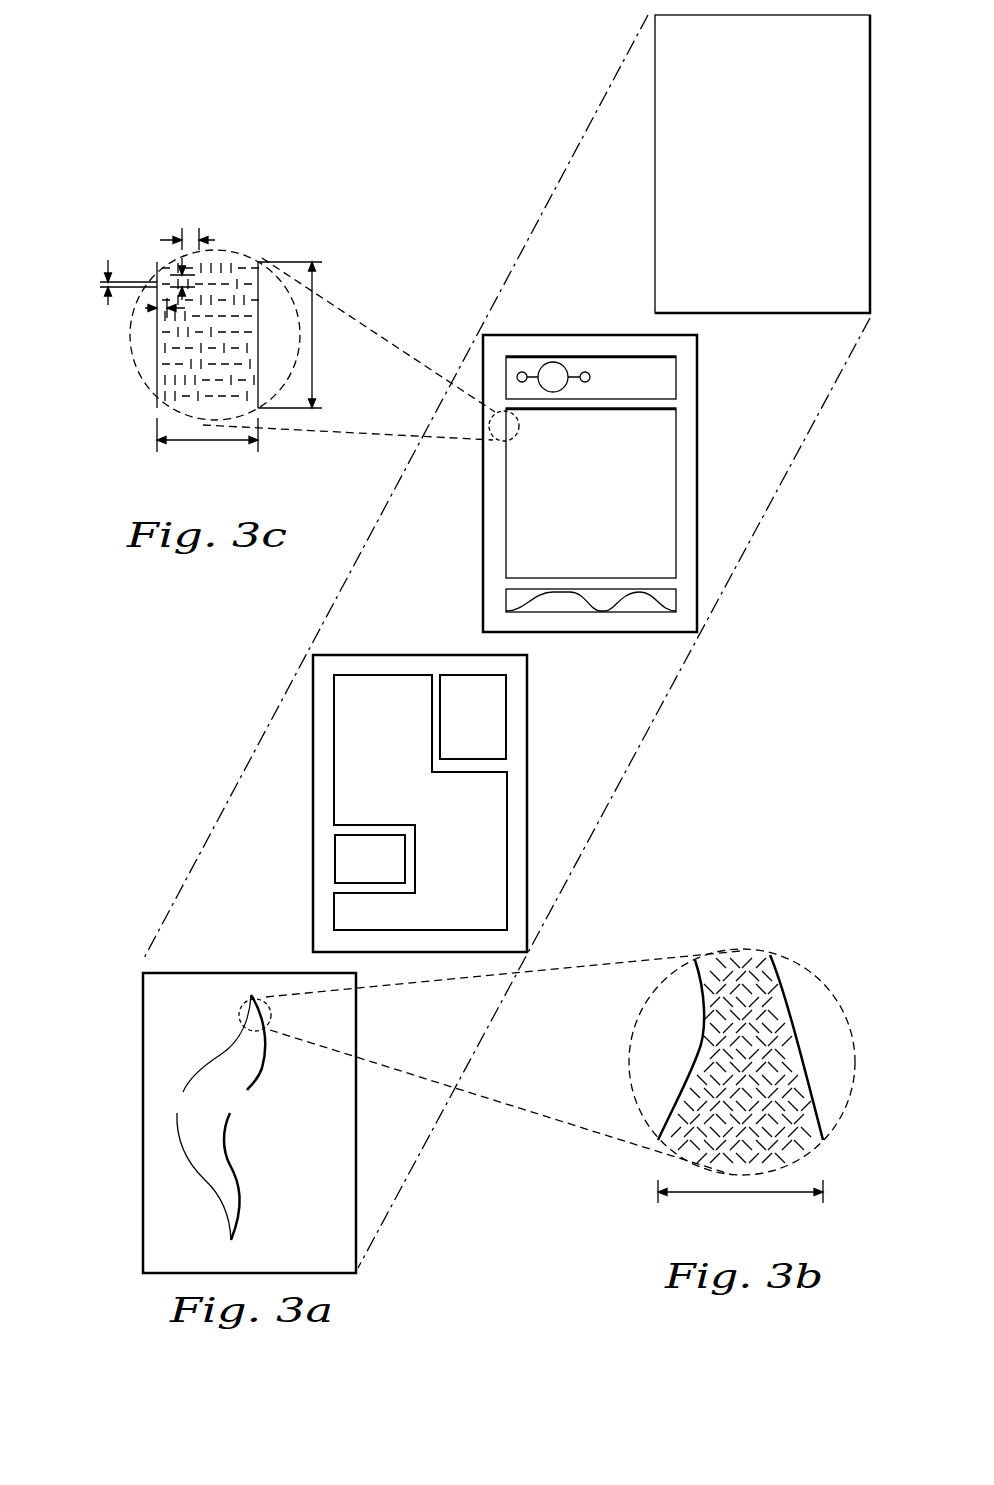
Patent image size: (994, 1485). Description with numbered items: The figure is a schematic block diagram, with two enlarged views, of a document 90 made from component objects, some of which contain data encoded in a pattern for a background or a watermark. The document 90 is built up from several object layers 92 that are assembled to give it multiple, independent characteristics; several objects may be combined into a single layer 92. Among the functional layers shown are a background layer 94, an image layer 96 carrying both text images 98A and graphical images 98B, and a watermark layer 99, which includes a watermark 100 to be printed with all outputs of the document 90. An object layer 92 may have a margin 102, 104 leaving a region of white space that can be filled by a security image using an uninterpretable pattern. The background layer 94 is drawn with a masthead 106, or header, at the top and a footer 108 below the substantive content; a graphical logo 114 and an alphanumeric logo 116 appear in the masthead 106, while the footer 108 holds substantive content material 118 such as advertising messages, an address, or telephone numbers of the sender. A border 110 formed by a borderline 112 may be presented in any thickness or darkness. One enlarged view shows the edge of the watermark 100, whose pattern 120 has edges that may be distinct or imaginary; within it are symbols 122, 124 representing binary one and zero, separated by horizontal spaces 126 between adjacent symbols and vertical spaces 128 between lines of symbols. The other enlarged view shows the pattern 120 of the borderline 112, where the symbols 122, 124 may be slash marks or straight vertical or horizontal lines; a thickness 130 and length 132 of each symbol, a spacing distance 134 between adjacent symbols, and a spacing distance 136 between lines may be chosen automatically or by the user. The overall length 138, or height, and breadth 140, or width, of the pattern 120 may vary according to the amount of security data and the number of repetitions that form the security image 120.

In FIG. 3A, the document 90 is at (97, 1253).
In FIG. 3A, the object layer 92 is at (637, 190).
In FIG. 3A, the background layer 94 is at (585, 482).
In FIG. 3A, the image layer 96 is at (413, 803).
In FIG. 3A, the text images 98A is at (420, 802).
In FIG. 3A, the graphical images 98B is at (420, 779).
In FIG. 3A, the watermark layer 99 is at (211, 1123).
In FIG. 3A, the watermark 100 is at (228, 1143).
In FIG. 3B, the watermark 100 is at (628, 1072).
In FIG. 3A, the margin 102 is at (527, 802).
In FIG. 3A, the margin 104 is at (697, 483).
In FIG. 3A, the masthead 106 is at (676, 378).
In FIG. 3A, the footer 108 is at (634, 612).
In FIG. 3A, the border 110 is at (500, 477).
In FIG. 3A, the borderline 112 is at (676, 440).
In FIG. 3C, the borderline 112 is at (297, 372).
In FIG. 3A, the graphical logo 114 is at (553, 362).
In FIG. 3A, the alphanumeric logo 116 is at (632, 357).
In FIG. 3A, the content material 118 is at (573, 608).
In FIG. 3B, the pattern 120 is at (766, 1021).
In FIG. 3C, the pattern 120 is at (211, 337).
In FIG. 3B, the symbol 122 is at (720, 960).
In FIG. 3C, the symbol 122 is at (232, 262).
In FIG. 3B, the symbol 124 is at (760, 962).
In FIG. 3C, the symbol 124 is at (215, 262).
In FIG. 3B, the horizontal space 126 is at (735, 955).
In FIG. 3C, the horizontal space 126 is at (160, 378).
In FIG. 3B, the vertical space 128 is at (698, 976).
In FIG. 3C, the vertical space 128 is at (178, 265).
In FIG. 3C, the thickness 130 is at (100, 284).
In FIG. 3C, the length 132 is at (148, 308).
In FIG. 3C, the spacing distance 134 is at (190, 232).
In FIG. 3C, the spacing distance 136 is at (180, 258).
In FIG. 3C, the length 138 is at (316, 343).
In FIG. 3B, the breadth 140 is at (740, 1195).
In FIG. 3C, the breadth 140 is at (205, 446).